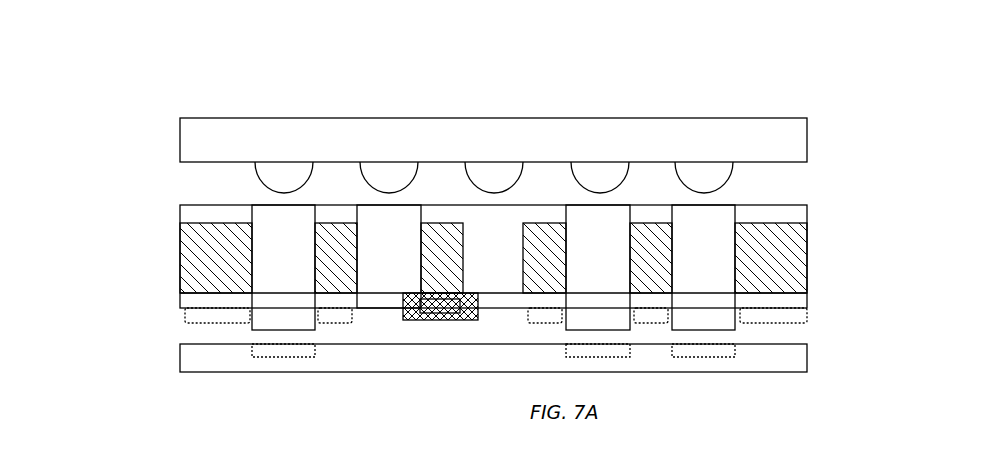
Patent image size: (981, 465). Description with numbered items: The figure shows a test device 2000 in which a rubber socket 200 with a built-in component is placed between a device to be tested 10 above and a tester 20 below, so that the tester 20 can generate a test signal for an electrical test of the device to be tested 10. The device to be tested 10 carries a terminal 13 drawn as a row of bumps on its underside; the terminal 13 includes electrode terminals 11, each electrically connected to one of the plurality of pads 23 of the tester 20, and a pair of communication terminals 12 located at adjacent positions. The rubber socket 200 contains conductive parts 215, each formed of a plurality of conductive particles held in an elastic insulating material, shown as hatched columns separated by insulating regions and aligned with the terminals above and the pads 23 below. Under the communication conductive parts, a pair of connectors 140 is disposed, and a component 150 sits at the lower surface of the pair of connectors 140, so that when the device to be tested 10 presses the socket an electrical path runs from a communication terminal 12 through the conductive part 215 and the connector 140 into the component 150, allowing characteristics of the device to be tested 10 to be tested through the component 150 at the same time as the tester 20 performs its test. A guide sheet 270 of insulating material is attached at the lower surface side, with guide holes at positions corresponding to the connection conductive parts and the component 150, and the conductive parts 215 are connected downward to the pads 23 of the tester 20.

The test device 2000 is at (98, 108).
The device to be tested 10 is at (821, 141).
The electrode terminal 11 is at (652, 123).
The communication terminal 12 is at (389, 175).
The terminal 13 is at (494, 101).
The rubber socket 200 is at (476, 254).
The conductive part 215 is at (372, 255).
The guide sheet 270 is at (807, 312).
The connector 140 is at (428, 318).
The component 150 is at (455, 318).
The tester 20 is at (541, 390).
The pad 23 is at (705, 350).